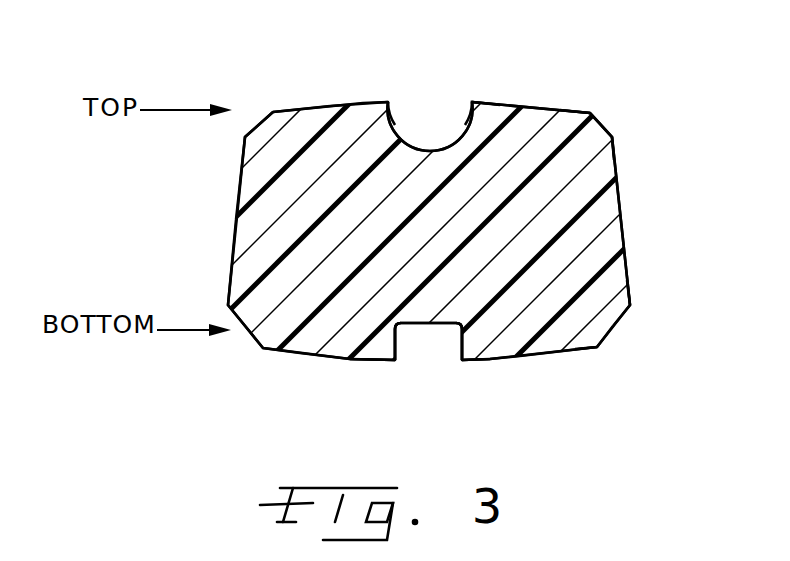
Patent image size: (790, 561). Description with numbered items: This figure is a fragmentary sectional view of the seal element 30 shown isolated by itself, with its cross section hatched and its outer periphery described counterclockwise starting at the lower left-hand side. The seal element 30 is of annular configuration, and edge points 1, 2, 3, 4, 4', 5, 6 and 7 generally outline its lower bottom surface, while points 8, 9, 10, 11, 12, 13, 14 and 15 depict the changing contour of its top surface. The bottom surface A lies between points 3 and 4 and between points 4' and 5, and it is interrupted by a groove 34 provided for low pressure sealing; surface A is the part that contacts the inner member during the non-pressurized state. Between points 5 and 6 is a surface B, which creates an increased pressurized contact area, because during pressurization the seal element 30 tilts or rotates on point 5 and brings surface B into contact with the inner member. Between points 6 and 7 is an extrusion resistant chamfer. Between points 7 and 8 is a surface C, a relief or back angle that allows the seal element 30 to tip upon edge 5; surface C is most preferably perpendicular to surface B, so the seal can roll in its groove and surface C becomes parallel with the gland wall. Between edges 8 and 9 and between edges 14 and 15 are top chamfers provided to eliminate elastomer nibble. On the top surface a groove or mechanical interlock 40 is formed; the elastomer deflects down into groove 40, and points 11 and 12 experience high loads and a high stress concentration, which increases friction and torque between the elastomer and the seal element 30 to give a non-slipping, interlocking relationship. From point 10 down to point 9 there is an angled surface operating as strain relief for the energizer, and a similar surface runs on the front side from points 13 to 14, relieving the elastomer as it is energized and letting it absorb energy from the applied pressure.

The edge point 1 is at (228, 305).
The edge point 2 is at (263, 348).
The edge point 3 is at (358, 360).
The edge point 4 is at (391, 389).
The edge point 4' is at (463, 396).
The edge point 5 is at (495, 360).
The edge point 6 is at (597, 347).
The edge point 7 is at (630, 305).
The edge point 8 is at (612, 137).
The edge point 9 is at (590, 113).
The edge point 10 is at (497, 100).
The edge point 11 is at (472, 100).
The edge point 12 is at (390, 100).
The edge point 13 is at (363, 100).
The edge point 14 is at (273, 110).
The edge point 15 is at (245, 137).
The seal element 30 is at (585, 187).
The groove 34 is at (430, 327).
The mechanical interlock groove 40 is at (453, 128).
The bottom surface A is at (477, 360).
The surface B is at (555, 353).
The surface C is at (623, 245).